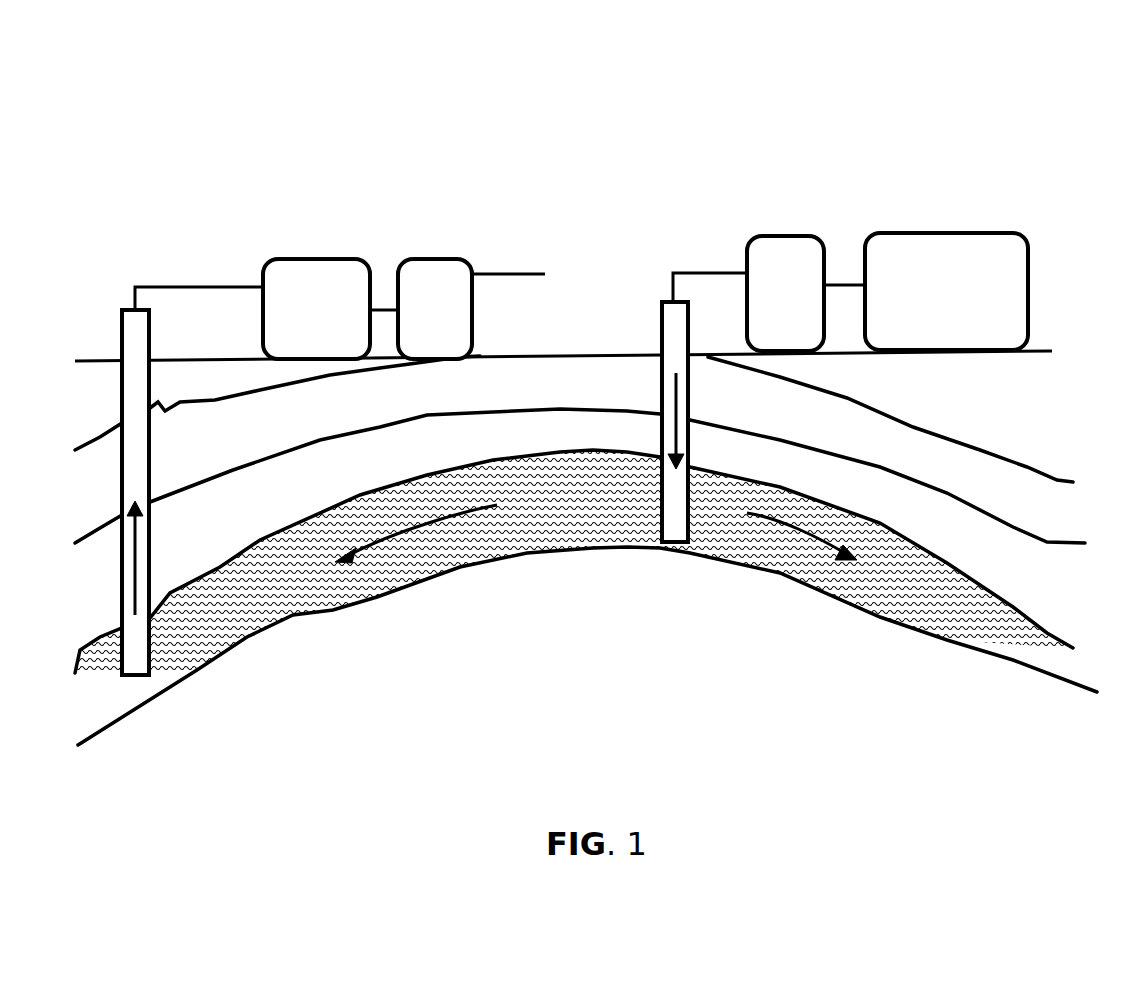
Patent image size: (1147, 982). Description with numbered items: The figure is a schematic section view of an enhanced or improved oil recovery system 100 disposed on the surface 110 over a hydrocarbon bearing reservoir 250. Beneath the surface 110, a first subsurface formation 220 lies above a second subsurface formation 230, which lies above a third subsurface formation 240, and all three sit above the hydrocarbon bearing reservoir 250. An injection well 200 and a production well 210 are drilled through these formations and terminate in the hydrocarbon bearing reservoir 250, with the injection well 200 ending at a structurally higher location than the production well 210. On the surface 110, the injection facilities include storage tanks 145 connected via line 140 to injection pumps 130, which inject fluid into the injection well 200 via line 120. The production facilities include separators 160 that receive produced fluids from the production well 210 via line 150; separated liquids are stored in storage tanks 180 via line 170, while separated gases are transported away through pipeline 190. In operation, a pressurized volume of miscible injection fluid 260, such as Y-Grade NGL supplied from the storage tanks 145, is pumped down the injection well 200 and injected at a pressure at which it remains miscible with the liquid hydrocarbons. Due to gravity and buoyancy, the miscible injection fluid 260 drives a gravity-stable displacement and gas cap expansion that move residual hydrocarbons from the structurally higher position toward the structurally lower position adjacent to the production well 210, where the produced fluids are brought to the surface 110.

The enhanced or improved oil recovery system 100 is at (782, 137).
The surface 110 is at (1042, 350).
The line 120 is at (680, 273).
The injection pumps 130 is at (795, 237).
The line 140 is at (840, 285).
The storage tanks 145 is at (965, 233).
The line 150 is at (193, 287).
The separators 160 is at (313, 260).
The line 170 is at (385, 310).
The storage tanks 180 is at (448, 260).
The pipeline 190 is at (483, 272).
The injection well 200 is at (690, 400).
The production well 210 is at (149, 481).
The first subsurface formation 220 is at (993, 408).
The second subsurface formation 230 is at (965, 471).
The third subsurface formation 240 is at (1010, 568).
The hydrocarbon bearing reservoir 250 is at (1112, 679).
The miscible injection fluid 260 is at (277, 575).